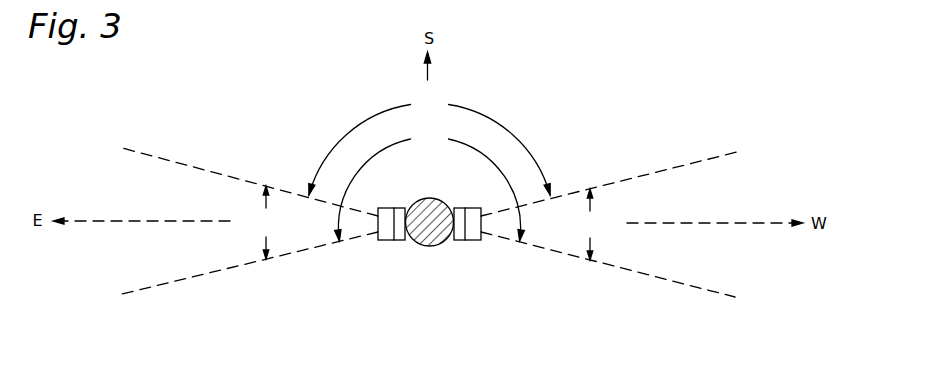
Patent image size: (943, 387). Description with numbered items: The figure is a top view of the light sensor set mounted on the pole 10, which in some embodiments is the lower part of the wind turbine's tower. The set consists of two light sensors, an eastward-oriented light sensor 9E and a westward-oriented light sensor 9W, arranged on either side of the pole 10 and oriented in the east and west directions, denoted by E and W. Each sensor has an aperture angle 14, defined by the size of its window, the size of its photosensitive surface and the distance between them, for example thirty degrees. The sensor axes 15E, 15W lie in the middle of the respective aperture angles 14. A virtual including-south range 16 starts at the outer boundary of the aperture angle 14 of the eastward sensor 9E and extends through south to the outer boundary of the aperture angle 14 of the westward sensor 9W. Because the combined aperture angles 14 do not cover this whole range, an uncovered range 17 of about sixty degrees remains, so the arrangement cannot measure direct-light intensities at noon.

The pole 10 is at (425, 245).
The eastward-oriented light sensor 9E is at (390, 248).
The westward-oriented light sensor 9W is at (468, 248).
The aperture angle 14 is at (429, 223).
The sensor axis 15E is at (131, 222).
The sensor axis 15W is at (722, 224).
The including-south range 16 is at (430, 185).
The range that is not covered 17 is at (429, 143).